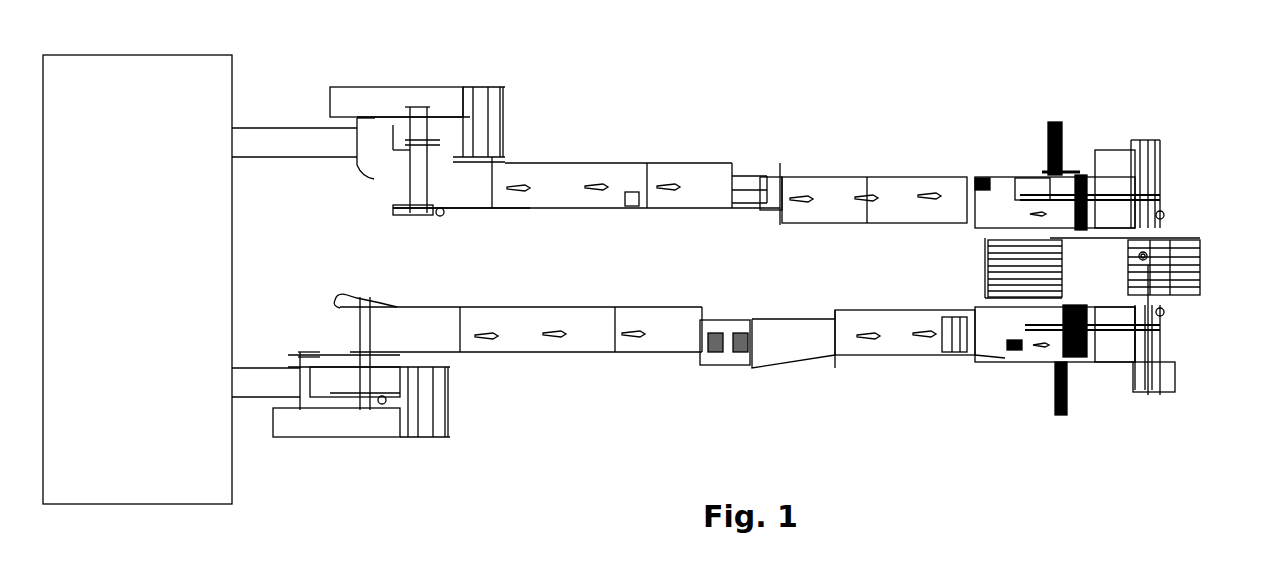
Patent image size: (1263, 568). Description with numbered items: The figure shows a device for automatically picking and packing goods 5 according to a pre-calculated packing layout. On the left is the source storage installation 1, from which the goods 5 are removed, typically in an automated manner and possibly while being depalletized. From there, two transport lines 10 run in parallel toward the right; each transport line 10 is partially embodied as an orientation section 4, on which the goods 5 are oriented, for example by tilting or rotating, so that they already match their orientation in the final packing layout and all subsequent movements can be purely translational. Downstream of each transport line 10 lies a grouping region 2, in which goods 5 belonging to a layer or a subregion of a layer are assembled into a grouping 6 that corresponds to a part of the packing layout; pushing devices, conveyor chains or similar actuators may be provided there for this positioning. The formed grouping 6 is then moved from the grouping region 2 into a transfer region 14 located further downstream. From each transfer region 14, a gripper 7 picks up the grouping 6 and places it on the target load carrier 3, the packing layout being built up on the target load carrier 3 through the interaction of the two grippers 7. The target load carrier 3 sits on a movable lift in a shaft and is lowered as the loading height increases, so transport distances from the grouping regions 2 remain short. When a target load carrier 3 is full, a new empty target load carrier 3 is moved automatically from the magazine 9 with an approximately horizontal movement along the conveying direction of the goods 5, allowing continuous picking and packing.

The source storage installation 1 is at (146, 267).
The grouping region 2 is at (1023, 84).
The target load carrier 3 is at (1185, 283).
The orientation section 4 is at (775, 183).
The goods 5 is at (983, 178).
The grouping 6 is at (1073, 362).
The gripper 7 is at (1158, 182).
The magazine 9 is at (985, 283).
The transport line 10 is at (666, 131).
The transfer region 14 is at (1103, 136).